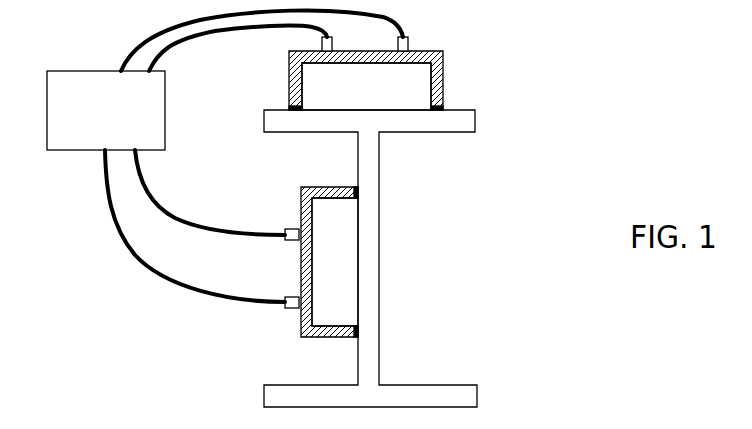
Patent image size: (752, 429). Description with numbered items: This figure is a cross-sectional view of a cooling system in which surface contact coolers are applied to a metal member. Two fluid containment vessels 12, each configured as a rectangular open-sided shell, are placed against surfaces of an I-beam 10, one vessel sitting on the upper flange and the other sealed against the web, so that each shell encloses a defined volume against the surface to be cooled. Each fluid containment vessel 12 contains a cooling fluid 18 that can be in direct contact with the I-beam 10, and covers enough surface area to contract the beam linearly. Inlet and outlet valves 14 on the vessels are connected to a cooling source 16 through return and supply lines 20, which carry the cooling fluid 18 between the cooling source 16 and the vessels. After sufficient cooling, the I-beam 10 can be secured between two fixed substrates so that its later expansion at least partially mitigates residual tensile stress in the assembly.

The I-beam 10 is at (380, 237).
The fluid containment vessel 12 is at (445, 78).
The inlet and outlet valves 14 is at (337, 43).
The cooling source 16 is at (93, 120).
The cooling fluid 18 is at (366, 194).
The return and supply lines 20 is at (185, 22).